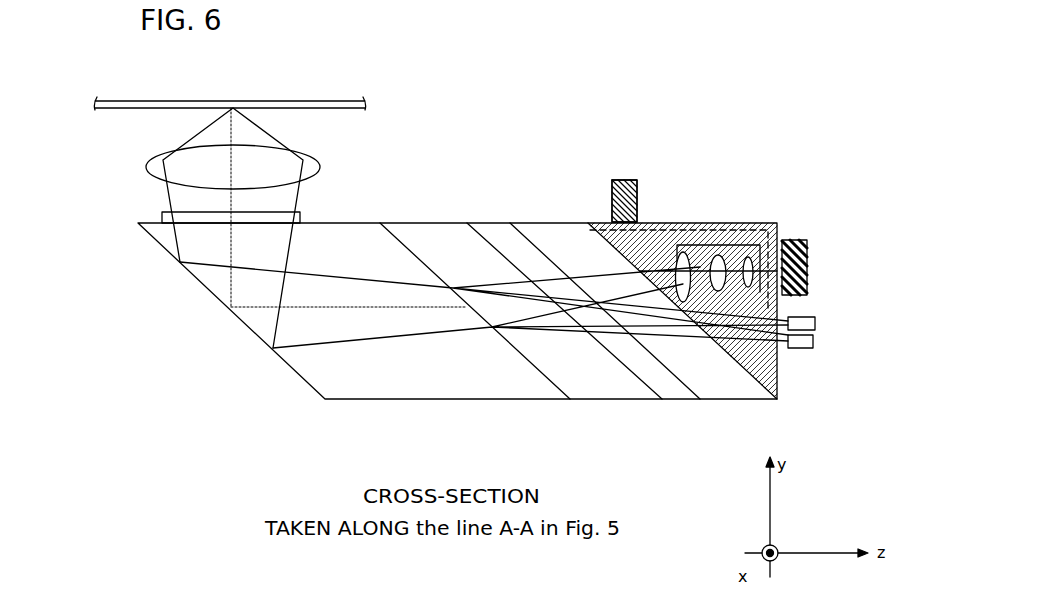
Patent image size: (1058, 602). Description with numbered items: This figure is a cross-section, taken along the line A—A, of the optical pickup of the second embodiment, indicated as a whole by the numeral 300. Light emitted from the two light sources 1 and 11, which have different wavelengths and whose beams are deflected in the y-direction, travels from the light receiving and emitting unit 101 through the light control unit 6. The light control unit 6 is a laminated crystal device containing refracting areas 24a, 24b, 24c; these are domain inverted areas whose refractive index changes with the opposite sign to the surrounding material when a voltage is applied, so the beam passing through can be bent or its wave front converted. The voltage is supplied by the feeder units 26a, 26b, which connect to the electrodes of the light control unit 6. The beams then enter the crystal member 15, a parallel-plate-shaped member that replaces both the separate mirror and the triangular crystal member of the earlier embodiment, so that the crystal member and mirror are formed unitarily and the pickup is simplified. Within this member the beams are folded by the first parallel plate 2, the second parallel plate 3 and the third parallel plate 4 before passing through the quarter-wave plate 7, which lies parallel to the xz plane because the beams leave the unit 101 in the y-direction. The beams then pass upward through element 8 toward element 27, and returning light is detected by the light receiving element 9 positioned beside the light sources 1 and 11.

The light source 1 is at (808, 313).
The first parallel plate 2 is at (403, 223).
The second parallel plate 3 is at (545, 223).
The third parallel plate 4 is at (485, 223).
The light control unit 6 is at (672, 220).
The quarter-wave plate 7 is at (163, 215).
The objective lens 8 is at (148, 167).
The light receiving element 9 is at (808, 252).
The light source 11 is at (812, 343).
The crystal member 15 is at (438, 401).
The refracting area 24a is at (733, 218).
The refracting area 24b is at (718, 273).
The refracting area 24c is at (748, 272).
The feeder unit 26a is at (625, 180).
The feeder unit 26b is at (624, 201).
The optical disc 27 is at (298, 100).
The light receiving and emitting unit 101 is at (633, 422).
The optical pickup 300 is at (473, 125).